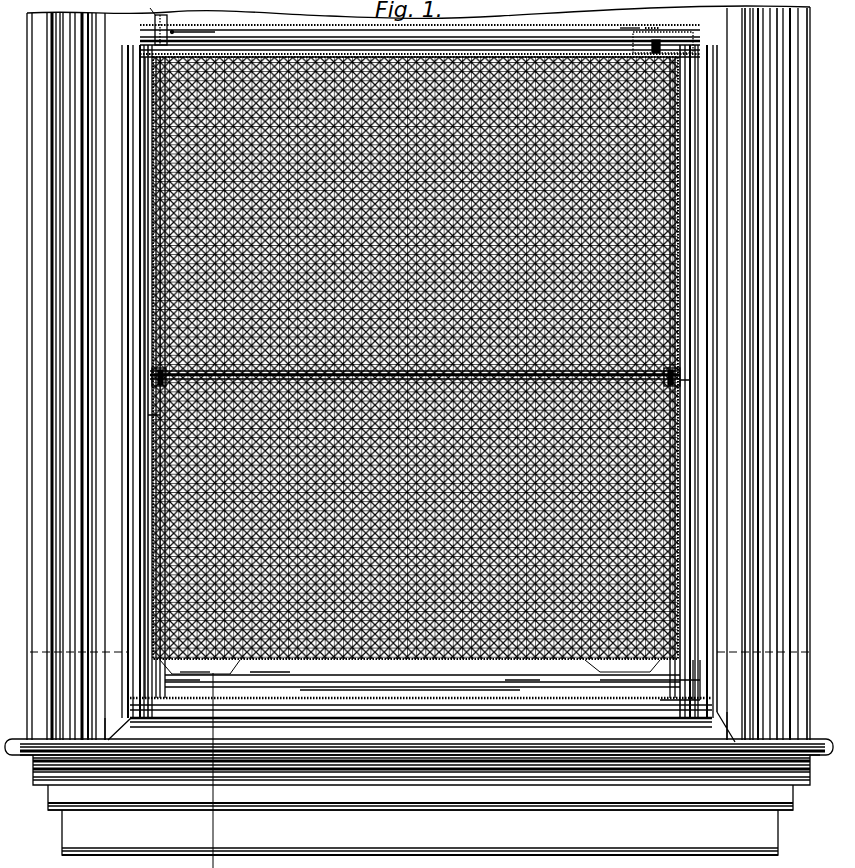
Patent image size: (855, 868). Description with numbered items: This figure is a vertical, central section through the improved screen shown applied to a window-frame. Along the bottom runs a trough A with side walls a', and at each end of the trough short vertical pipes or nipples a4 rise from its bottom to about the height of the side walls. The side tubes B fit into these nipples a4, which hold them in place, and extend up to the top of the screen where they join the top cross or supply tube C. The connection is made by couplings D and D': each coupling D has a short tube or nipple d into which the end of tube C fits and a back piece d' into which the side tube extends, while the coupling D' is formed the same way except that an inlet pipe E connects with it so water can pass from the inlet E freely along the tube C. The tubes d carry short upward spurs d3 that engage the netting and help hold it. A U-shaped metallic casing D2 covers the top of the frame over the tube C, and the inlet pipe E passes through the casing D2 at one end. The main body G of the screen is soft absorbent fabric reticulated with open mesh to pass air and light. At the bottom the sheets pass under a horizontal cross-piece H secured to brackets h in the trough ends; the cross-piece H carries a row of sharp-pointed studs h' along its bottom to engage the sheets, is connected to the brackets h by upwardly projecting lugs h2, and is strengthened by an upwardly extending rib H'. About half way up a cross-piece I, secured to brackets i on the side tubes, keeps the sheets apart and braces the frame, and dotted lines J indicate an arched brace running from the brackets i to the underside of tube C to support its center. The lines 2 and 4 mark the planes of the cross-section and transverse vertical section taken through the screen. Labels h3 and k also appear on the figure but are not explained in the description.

The coupling D' is at (174, 26).
The spurs d3 is at (202, 31).
The top cross or supply tube C is at (325, 38).
The U-shaped metallic casing D2 is at (420, 17).
The back piece d' is at (620, 18).
The short tube or nipple d is at (652, 18).
The coupling D is at (663, 30).
The inlet pipe E is at (149, 8).
The section line 4 4 is at (212, 434).
The arched brace J is at (172, 264).
The main body of the screen G is at (812, 326).
The cross-piece or brace I is at (152, 372).
The brackets i is at (152, 382).
The side tubes B is at (147, 415).
The section line 2— 2 is at (415, 643).
The upwardly projecting lugs h2 is at (185, 675).
The side guide h3 is at (690, 666).
The side walls a' is at (180, 709).
The brackets h is at (195, 707).
The sharp-pointed studs or pins h' is at (270, 707).
The horizontal cross-piece H is at (421, 399).
The rib H' is at (410, 704).
The fastening strip k is at (522, 676).
The trough A is at (662, 677).
The short pipes or nipples a4 is at (677, 700).